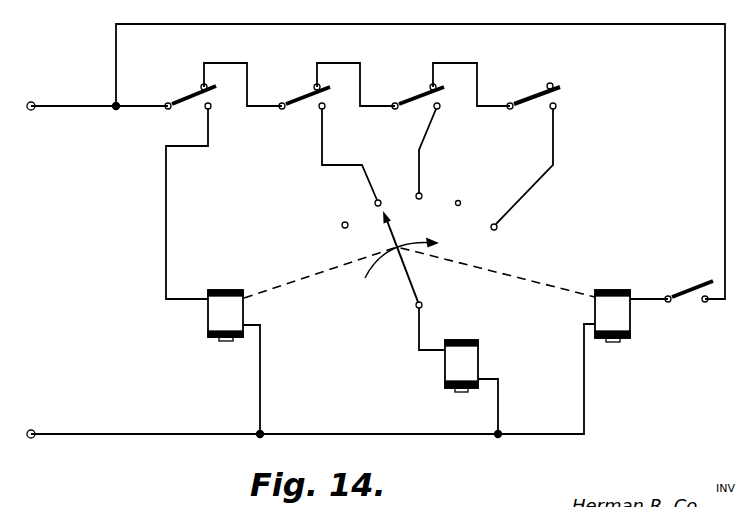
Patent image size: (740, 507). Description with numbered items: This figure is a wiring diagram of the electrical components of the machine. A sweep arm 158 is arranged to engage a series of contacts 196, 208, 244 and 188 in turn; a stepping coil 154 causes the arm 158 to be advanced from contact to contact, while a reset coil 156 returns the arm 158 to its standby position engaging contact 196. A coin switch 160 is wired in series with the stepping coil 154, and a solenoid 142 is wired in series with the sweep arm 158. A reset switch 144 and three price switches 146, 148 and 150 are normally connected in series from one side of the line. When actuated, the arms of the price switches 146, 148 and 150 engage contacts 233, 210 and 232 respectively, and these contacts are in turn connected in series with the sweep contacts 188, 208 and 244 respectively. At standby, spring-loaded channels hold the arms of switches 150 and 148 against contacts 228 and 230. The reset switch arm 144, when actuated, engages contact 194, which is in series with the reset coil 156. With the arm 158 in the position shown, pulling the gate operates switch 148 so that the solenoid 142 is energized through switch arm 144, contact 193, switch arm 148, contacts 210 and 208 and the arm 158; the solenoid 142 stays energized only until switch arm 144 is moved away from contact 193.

The solenoid 142 is at (465, 360).
The reset switch 144 is at (183, 97).
The price switch 146 is at (534, 96).
The price switch 148 is at (301, 96).
The price switch 150 is at (420, 96).
The stepping coil 154 is at (620, 315).
The reset coil 156 is at (210, 312).
The sweep arm 158 is at (409, 279).
The coin switch 160 is at (691, 291).
The contact 188 is at (498, 227).
The contact 193 is at (203, 83).
The contact 194 is at (209, 110).
The contact 196 is at (342, 228).
The contact 208 is at (382, 200).
The contact 210 is at (320, 110).
The contact 228 is at (315, 83).
The contact 230 is at (433, 83).
The contact 232 is at (440, 110).
The contact 233 is at (557, 108).
The contact 244 is at (422, 194).